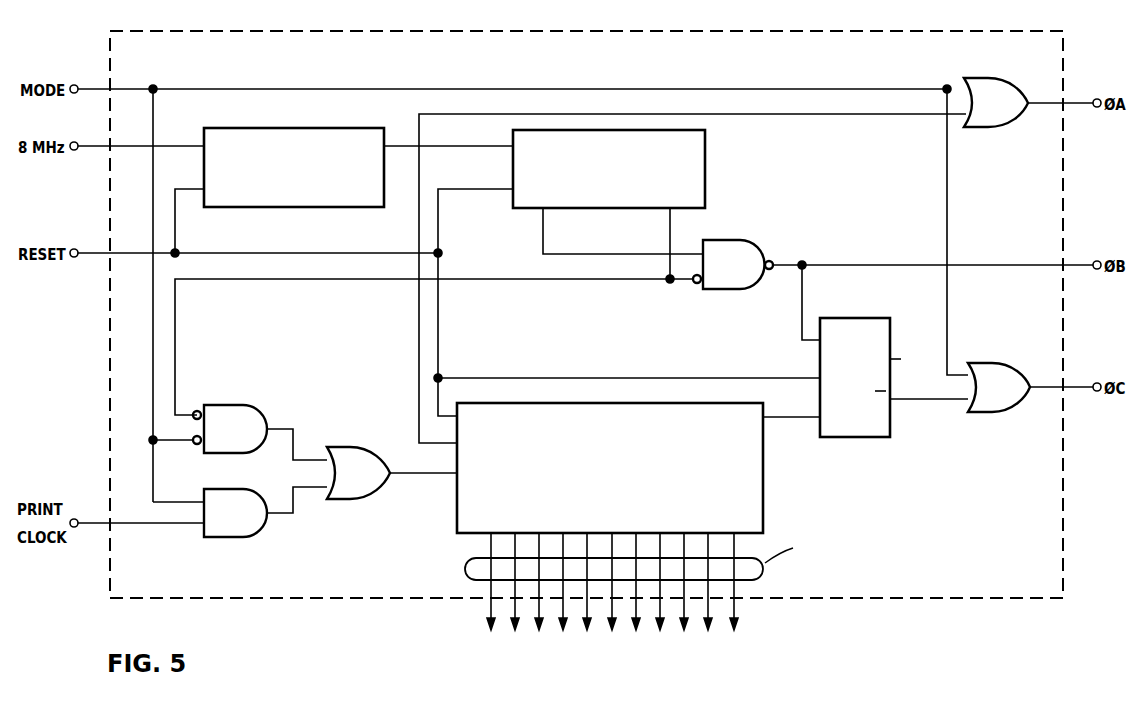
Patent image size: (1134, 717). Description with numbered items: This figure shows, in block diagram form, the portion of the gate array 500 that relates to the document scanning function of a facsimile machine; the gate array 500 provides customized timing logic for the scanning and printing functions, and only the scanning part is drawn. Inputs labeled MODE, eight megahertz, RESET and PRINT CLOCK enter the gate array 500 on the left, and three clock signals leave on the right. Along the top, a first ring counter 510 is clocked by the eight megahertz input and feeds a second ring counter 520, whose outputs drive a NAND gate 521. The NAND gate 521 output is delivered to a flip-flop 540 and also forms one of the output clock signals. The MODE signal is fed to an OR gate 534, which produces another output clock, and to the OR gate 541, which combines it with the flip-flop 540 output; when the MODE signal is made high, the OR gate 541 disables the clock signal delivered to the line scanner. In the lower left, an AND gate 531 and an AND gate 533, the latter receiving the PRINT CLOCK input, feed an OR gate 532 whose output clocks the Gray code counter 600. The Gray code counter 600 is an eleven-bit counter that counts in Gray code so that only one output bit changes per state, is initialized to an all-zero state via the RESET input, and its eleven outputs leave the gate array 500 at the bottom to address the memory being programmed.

The gate array 500 is at (693, 31).
The first ring counter 510 is at (292, 209).
The second ring counter 520 is at (705, 168).
The NAND gate 521 is at (752, 240).
The AND gate 531 is at (250, 405).
The OR gate 532 is at (370, 497).
The AND gate 533 is at (245, 537).
The OR gate 534 is at (993, 78).
The flip-flop 540 is at (867, 318).
The OR gate 541 is at (998, 417).
The Gray code counter 600 is at (765, 469).